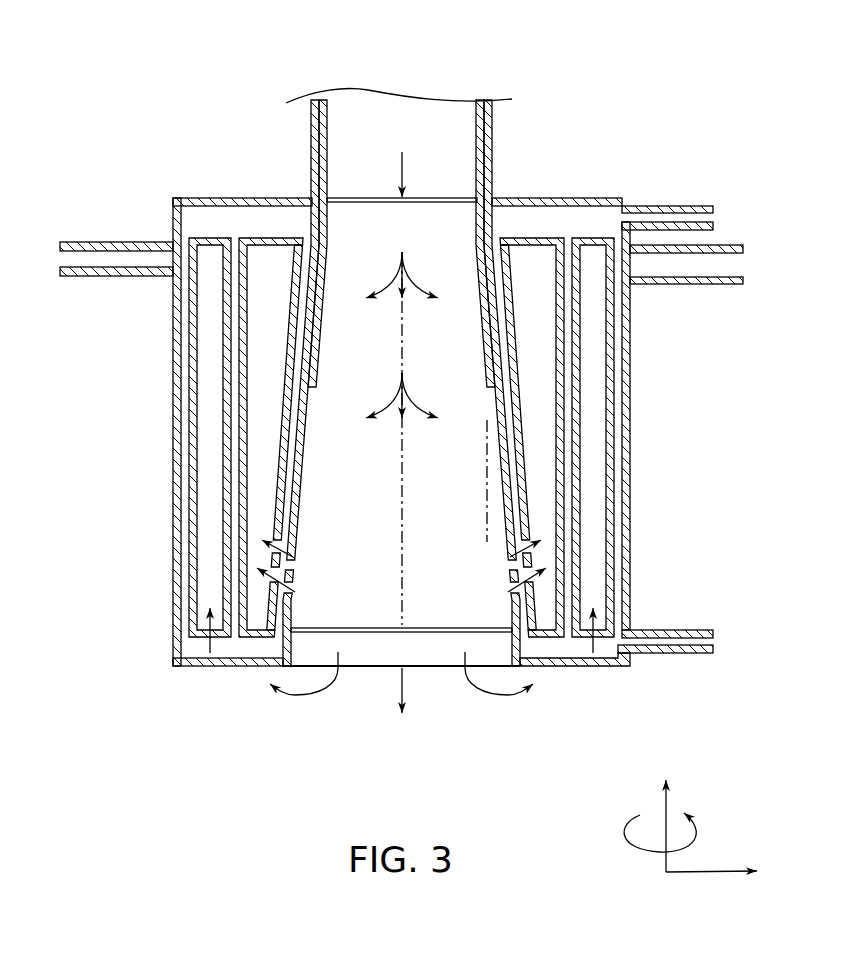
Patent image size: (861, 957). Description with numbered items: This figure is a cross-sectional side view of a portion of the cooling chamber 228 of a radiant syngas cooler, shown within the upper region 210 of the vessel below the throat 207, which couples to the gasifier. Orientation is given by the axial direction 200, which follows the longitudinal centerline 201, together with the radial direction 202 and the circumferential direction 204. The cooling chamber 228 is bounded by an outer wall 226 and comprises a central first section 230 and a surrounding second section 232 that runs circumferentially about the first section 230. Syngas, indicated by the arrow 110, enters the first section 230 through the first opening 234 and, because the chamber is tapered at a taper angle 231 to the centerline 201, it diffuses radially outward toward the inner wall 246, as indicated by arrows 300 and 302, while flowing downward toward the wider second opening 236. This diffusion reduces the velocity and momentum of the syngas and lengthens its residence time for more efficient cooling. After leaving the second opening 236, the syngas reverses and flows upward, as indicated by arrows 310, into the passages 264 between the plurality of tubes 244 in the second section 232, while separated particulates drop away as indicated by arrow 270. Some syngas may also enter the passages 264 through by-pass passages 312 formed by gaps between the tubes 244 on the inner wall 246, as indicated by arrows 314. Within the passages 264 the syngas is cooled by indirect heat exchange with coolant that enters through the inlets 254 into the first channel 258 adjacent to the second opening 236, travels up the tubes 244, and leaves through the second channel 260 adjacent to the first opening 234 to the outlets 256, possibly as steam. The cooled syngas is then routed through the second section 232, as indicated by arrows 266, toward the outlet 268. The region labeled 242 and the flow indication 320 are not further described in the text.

The syngas 110 is at (402, 165).
The axial direction or axis 200 is at (663, 813).
The longitudinal centerline 201 is at (408, 548).
The radial direction or axis 202 is at (707, 874).
The circumferential direction or axis 204 is at (640, 847).
The throat 207 is at (493, 138).
The upper region 210 is at (729, 407).
The outer wall 226 is at (174, 444).
The cooling chamber 228 is at (110, 43).
The first section 230 is at (378, 489).
The taper angle 231 is at (486, 478).
The second section 232 is at (200, 198).
The first opening 234 is at (360, 198).
The second opening 236 is at (430, 670).
The outer tube wall 242 is at (328, 294).
The plurality of tubes 244 is at (513, 302).
The inner wall 246 is at (304, 424).
The inlets 254 is at (715, 634).
The outlets 256 is at (715, 209).
The first channel 258 is at (245, 648).
The second channel 260 is at (222, 222).
The passages 264 is at (265, 397).
The arrows 266 is at (492, 697).
The outlet 268 is at (62, 246).
The arrow 270 is at (400, 693).
The arrows 300 is at (405, 254).
The arrows 302 is at (404, 378).
The arrows 310 is at (205, 655).
The by-pass passages 312 is at (298, 562).
The arrows 314 is at (297, 570).
The flow direction 320 is at (289, 273).